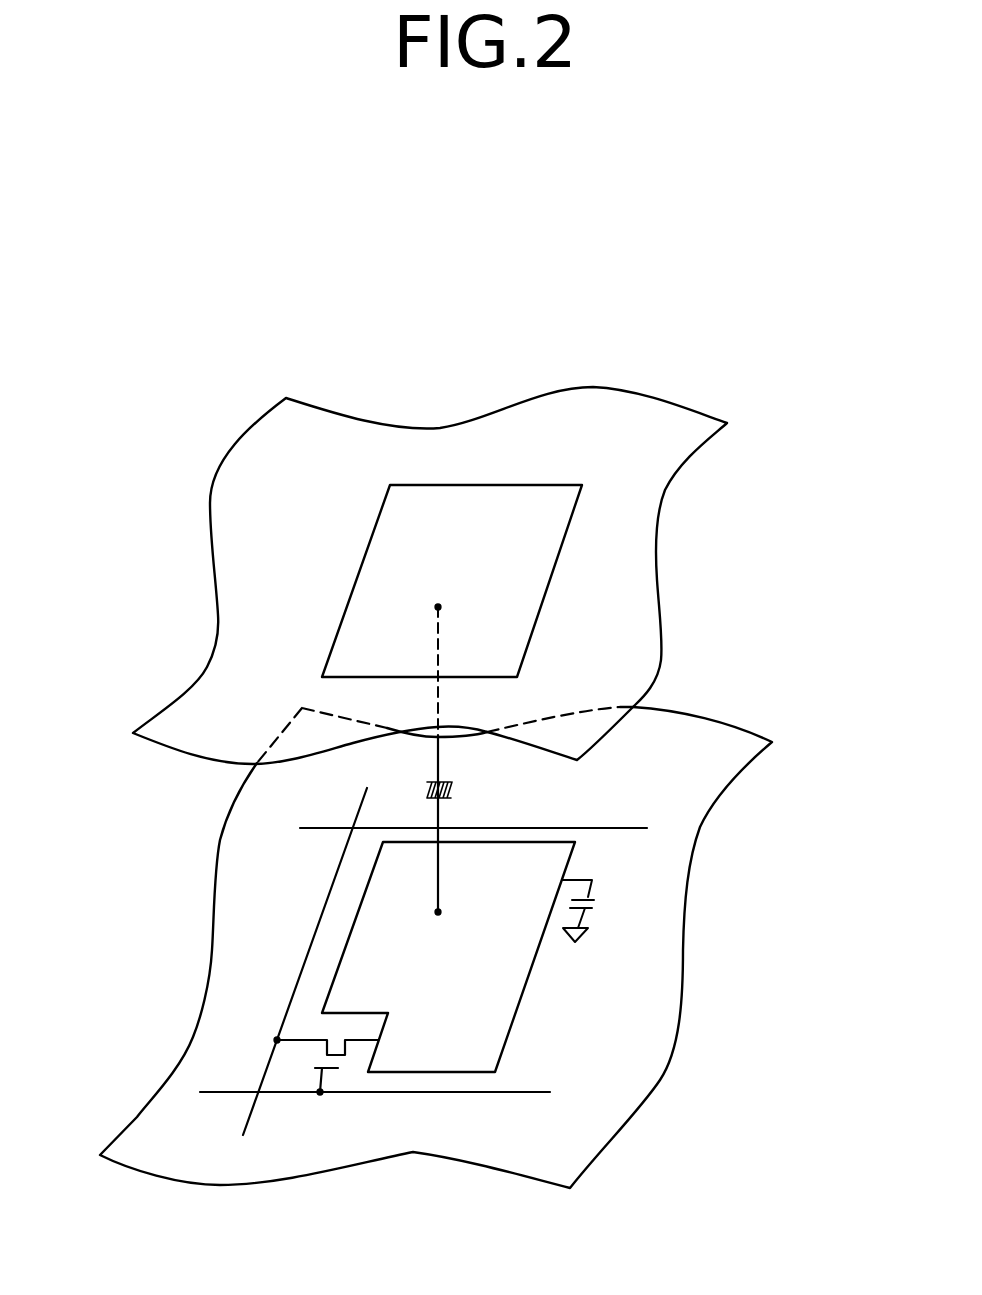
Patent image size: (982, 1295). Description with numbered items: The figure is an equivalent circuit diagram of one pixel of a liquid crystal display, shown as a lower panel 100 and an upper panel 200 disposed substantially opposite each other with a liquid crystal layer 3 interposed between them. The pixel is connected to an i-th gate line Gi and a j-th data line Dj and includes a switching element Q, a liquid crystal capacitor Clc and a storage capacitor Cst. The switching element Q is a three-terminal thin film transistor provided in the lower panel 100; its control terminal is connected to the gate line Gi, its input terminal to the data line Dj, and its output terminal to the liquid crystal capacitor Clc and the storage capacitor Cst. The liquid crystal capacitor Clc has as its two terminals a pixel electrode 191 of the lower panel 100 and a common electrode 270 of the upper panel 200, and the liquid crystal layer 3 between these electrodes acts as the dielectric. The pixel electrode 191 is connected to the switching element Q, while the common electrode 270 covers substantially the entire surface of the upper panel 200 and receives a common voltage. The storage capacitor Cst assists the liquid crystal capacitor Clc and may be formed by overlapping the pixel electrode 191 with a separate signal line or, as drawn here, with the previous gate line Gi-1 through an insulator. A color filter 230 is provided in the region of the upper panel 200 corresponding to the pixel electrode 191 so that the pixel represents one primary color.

The liquid crystal layer 3 is at (130, 843).
The lower panel 100 is at (688, 923).
The upper panel 200 is at (454, 575).
The common electrode 270 is at (655, 547).
The color filter 230 is at (543, 595).
The pixel electrode 191 is at (520, 1005).
The switching element Q is at (326, 1066).
The storage capacitor Cst is at (604, 911).
The liquid crystal capacitor Clc is at (465, 759).
The data line Dj is at (305, 954).
The gate line Gi is at (374, 1072).
The previous gate line Gi-1 is at (457, 845).